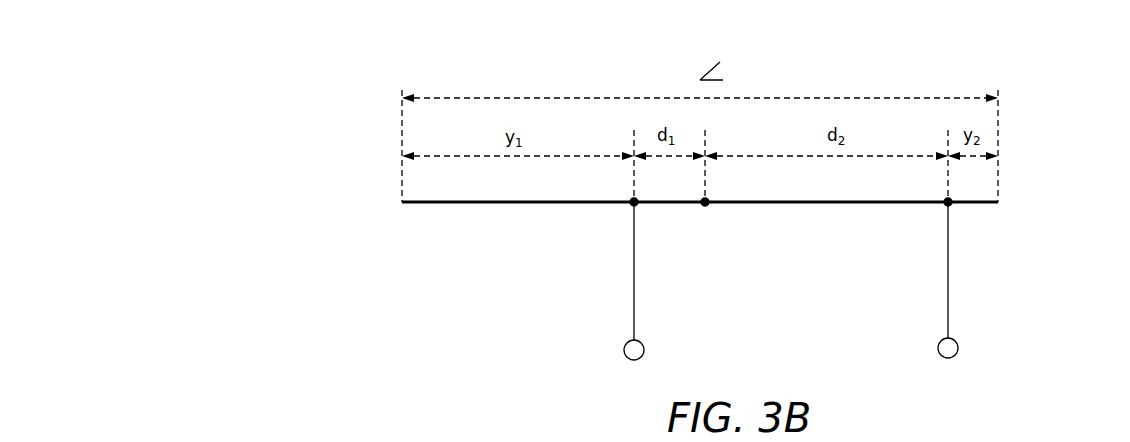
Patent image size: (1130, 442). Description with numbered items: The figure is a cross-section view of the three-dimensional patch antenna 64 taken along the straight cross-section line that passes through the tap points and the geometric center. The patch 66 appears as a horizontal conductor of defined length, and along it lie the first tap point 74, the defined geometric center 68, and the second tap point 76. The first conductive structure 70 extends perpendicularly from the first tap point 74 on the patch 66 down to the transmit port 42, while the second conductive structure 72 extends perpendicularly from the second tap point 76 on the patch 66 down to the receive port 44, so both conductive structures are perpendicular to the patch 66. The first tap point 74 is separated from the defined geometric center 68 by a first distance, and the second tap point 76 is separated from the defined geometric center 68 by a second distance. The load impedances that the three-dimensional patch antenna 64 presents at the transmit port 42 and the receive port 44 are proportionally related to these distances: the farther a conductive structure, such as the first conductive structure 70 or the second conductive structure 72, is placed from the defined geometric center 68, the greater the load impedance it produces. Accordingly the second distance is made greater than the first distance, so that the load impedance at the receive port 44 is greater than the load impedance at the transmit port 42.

The 3D patch antenna 64 is at (1055, 55).
The patch 66 is at (450, 203).
The defined geometric center 68 is at (705, 205).
The first conductive structure 70 is at (634, 295).
The second conductive structure 72 is at (948, 292).
The first tap point 74 is at (630, 205).
The second tap point 76 is at (952, 205).
The transmit port 42 is at (624, 350).
The receive port 44 is at (958, 348).